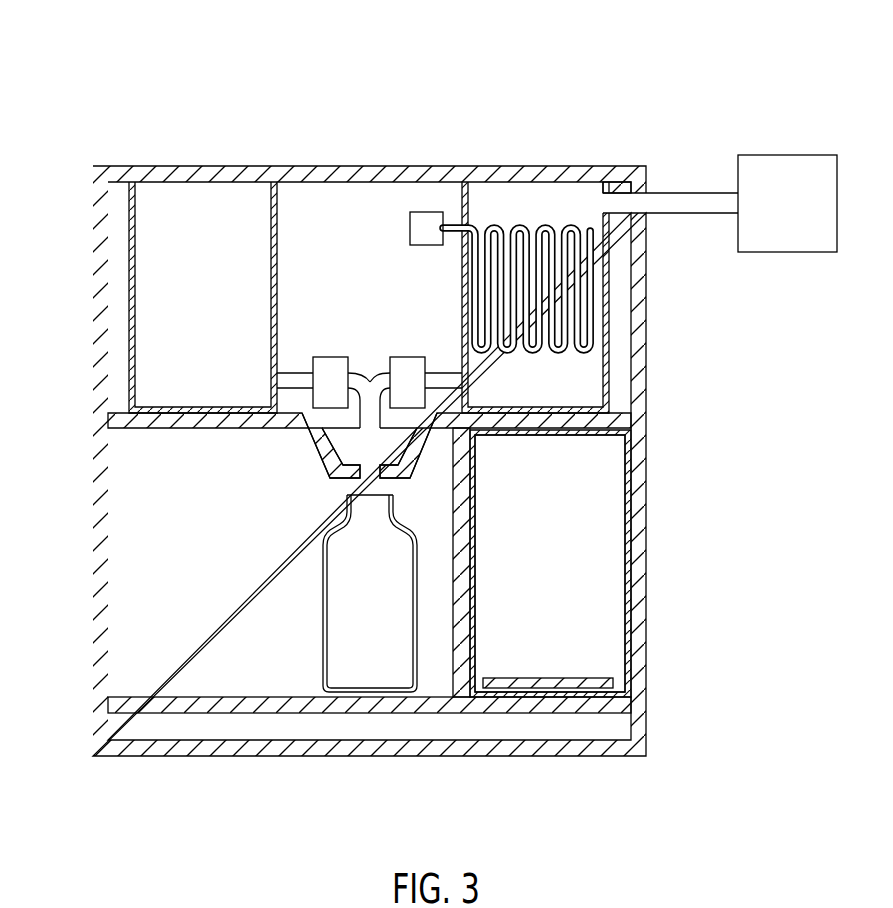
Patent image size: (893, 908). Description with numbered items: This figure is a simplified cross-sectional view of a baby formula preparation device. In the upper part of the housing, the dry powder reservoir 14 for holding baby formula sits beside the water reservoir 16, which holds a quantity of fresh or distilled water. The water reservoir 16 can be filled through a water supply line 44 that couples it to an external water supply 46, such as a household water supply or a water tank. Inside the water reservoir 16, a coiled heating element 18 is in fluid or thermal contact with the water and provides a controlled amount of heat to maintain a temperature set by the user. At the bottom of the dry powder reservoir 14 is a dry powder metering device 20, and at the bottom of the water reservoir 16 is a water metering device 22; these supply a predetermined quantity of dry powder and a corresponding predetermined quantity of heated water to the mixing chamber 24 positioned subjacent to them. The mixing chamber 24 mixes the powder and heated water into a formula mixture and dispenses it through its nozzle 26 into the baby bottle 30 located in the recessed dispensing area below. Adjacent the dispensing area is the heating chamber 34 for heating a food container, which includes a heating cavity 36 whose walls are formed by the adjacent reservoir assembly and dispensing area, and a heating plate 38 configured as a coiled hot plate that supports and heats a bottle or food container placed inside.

The dry powder reservoir 14 is at (176, 210).
The water reservoir 16 is at (605, 313).
The heating element 18 is at (430, 222).
The dry powder metering device 20 is at (333, 370).
The water metering device 22 is at (406, 365).
The mixing chamber 24 is at (332, 447).
The nozzle 26 is at (363, 483).
The baby bottle 30 is at (323, 635).
The heating chamber 34 is at (633, 537).
The heating cavity 36 is at (580, 583).
The heating plate 38 is at (557, 677).
The water supply line 44 is at (687, 193).
The external water supply 46 is at (781, 155).